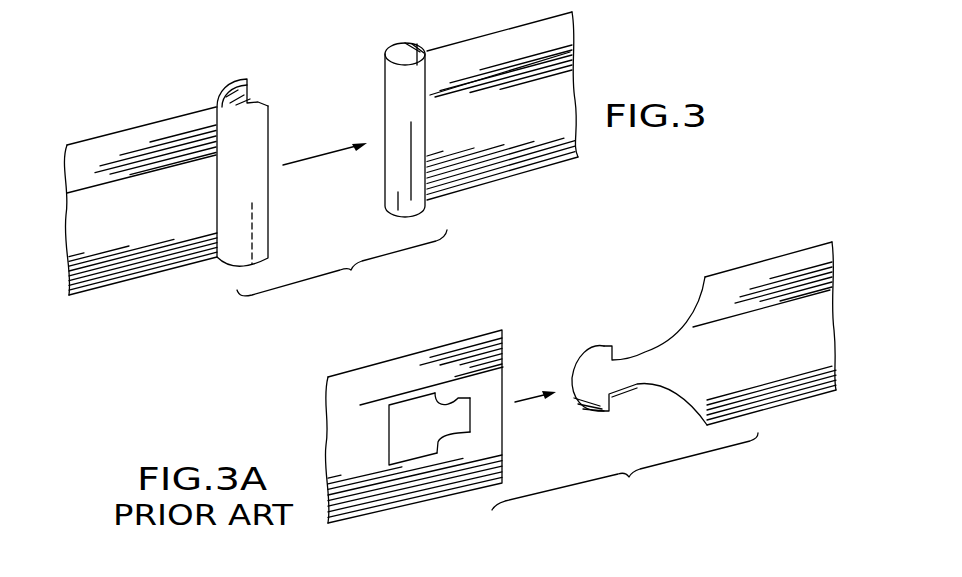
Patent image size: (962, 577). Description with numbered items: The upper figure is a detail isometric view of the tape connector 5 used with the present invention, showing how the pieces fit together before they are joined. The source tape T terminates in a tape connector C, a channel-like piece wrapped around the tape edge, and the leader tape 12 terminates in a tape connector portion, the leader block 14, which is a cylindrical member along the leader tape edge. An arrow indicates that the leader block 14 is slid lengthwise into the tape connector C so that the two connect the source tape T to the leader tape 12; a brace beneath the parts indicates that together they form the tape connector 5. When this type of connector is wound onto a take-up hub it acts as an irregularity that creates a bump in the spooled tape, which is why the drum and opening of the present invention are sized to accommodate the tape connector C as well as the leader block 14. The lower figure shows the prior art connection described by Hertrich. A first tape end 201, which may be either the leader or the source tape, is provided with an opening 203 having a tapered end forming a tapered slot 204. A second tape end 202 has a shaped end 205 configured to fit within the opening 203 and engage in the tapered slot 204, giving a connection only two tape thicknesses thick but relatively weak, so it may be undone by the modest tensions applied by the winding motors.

In FIG. 3, the tape connector 5 is at (106, 65).
In FIG. 3, the source tape T is at (67, 216).
In FIG. 3, the tape connector C is at (233, 78).
In FIG. 3, the leader tape 12 is at (546, 170).
In FIG. 3, the leader block 14 is at (395, 50).
In FIG. 3A, the first tape end 201 is at (343, 363).
In FIG. 3A, the prior art panel with tab 202 is at (807, 396).
In FIG. 3A, the opening 203 is at (414, 474).
In FIG. 3A, the tapered slot 204 is at (458, 433).
In FIG. 3A, the shaped end 205 is at (590, 348).